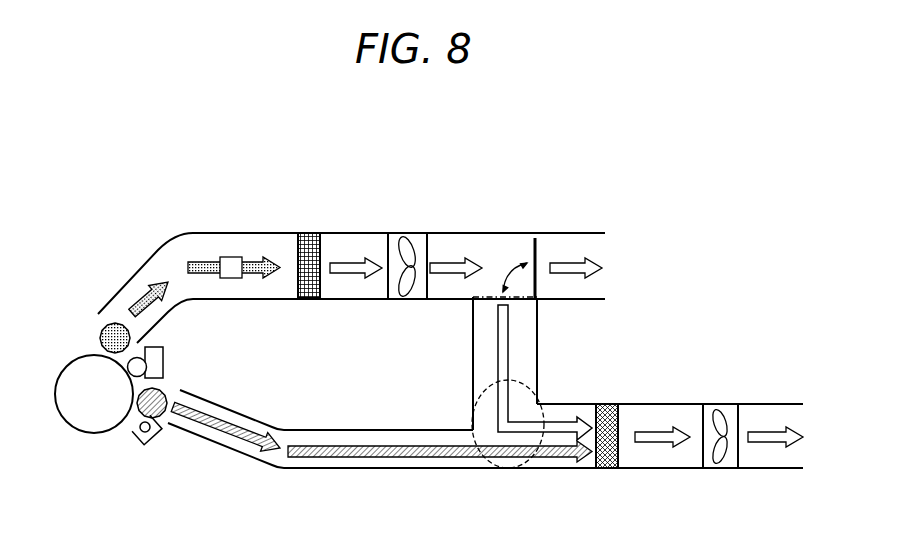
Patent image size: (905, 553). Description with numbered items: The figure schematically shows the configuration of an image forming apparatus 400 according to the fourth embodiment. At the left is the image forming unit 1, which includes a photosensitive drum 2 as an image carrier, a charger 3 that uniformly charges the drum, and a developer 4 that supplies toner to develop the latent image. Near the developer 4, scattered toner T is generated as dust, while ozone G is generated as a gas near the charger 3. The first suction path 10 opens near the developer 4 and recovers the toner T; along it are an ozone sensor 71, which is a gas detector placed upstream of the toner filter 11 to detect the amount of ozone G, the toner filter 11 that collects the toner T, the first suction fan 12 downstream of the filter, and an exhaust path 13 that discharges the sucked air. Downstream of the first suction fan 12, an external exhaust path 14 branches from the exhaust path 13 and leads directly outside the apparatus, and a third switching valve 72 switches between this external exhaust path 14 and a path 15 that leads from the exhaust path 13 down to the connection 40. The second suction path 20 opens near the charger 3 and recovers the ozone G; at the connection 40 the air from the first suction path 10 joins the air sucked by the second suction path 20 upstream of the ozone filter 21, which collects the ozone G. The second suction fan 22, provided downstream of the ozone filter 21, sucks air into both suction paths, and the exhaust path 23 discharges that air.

The image forming apparatus 400 is at (120, 167).
The image forming unit 1 is at (52, 290).
The photosensitive drum 2 is at (75, 430).
The charger 3 is at (140, 440).
The developer 4 is at (165, 362).
The toner T is at (112, 323).
The ozone G is at (167, 388).
The first suction path 10 is at (257, 233).
The toner filter 11 is at (312, 233).
The first suction fan 12 is at (408, 233).
The exhaust path 13 is at (470, 232).
The external exhaust path 14 is at (592, 233).
The path 15 is at (540, 350).
The second suction path 20 is at (357, 470).
The ozone filter 21 is at (607, 470).
The second suction fan 22 is at (722, 470).
The exhaust path 23 is at (777, 470).
The connection 40 is at (492, 468).
The ozone sensor 71 is at (230, 257).
The third switching valve 72 is at (538, 252).